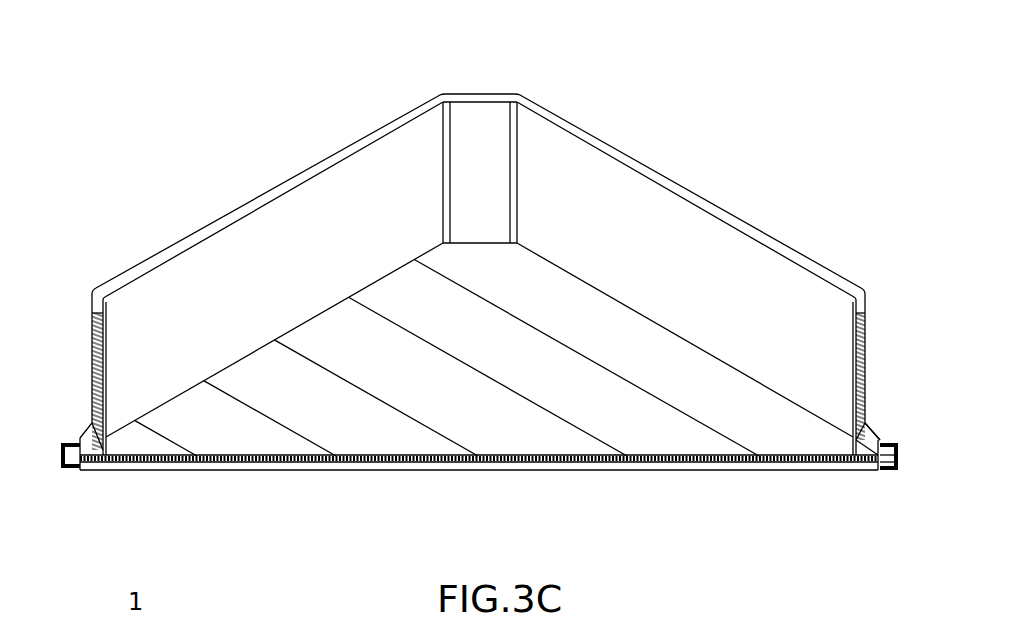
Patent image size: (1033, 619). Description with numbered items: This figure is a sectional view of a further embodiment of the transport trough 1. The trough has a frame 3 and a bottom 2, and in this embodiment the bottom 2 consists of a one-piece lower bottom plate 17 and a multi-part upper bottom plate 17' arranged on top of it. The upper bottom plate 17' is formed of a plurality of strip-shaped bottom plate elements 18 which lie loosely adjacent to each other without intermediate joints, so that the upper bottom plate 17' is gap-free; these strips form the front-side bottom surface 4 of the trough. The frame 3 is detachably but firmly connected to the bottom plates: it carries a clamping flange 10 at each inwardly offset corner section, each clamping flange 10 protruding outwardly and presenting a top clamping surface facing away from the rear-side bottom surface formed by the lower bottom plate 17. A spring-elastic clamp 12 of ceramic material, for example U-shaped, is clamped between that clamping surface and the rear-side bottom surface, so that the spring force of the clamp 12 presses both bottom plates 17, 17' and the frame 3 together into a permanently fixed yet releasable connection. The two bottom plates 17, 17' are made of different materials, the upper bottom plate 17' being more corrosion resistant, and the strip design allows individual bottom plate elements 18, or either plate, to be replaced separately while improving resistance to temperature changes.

The transport trough 1 is at (287, 167).
The bottom 2 is at (637, 487).
The frame 3 is at (653, 225).
The front-side bottom surface 4 is at (471, 351).
The clamping flange 10 is at (877, 448).
The spring-elastic clamp 12 is at (888, 440).
The lower bottom plate 17 is at (890, 509).
The upper bottom plate 17' is at (92, 493).
The strip-shaped bottom plate elements 18 is at (280, 392).